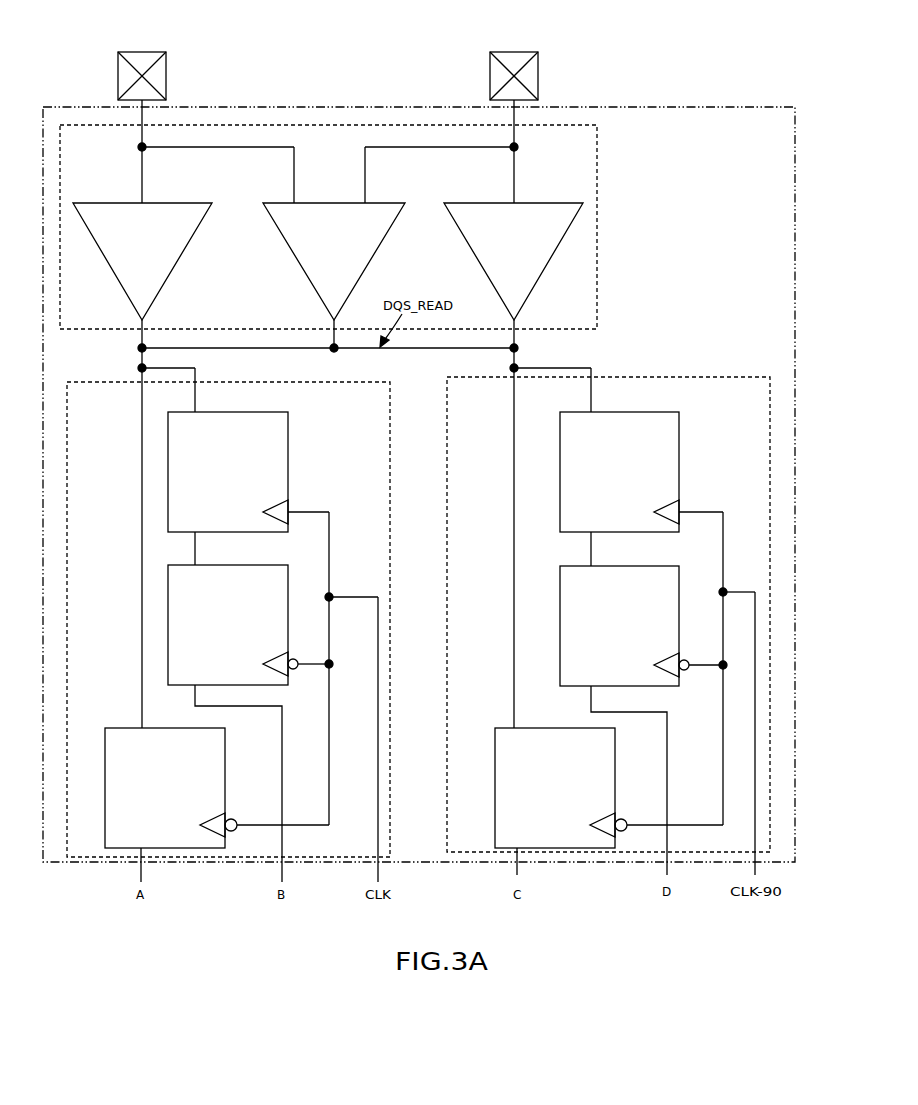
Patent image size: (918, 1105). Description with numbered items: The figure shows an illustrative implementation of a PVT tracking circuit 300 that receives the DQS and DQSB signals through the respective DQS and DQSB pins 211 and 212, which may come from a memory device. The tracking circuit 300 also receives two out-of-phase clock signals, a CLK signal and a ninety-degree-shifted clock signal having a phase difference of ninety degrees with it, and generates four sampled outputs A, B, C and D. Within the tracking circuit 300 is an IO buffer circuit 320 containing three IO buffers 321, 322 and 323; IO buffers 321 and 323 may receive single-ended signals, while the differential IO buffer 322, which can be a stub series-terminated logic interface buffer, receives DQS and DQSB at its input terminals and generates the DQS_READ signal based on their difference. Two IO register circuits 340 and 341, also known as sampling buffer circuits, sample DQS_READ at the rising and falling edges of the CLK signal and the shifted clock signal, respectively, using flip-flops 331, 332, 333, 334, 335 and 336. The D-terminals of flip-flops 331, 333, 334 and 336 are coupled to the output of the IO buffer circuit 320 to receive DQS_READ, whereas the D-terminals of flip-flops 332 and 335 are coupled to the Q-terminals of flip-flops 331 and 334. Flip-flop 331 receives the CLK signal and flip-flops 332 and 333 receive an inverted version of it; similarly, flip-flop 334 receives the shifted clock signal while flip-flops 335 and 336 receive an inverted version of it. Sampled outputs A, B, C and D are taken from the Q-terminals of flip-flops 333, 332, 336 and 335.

The DQS pin 211 is at (168, 75).
The DQSB pin 212 is at (538, 80).
The tracking circuit 300 is at (725, 275).
The IO buffer circuit 320 is at (600, 171).
The IO buffer 321 is at (156, 257).
The IO buffer 322 is at (348, 257).
The IO buffer 323 is at (528, 257).
The flip-flop 331 is at (241, 481).
The flip-flop 332 is at (241, 639).
The flip-flop 333 is at (177, 797).
The flip-flop 334 is at (632, 484).
The flip-flop 335 is at (632, 643).
The flip-flop 336 is at (569, 804).
The IO register circuit 340 is at (349, 432).
The IO register circuit 341 is at (726, 427).